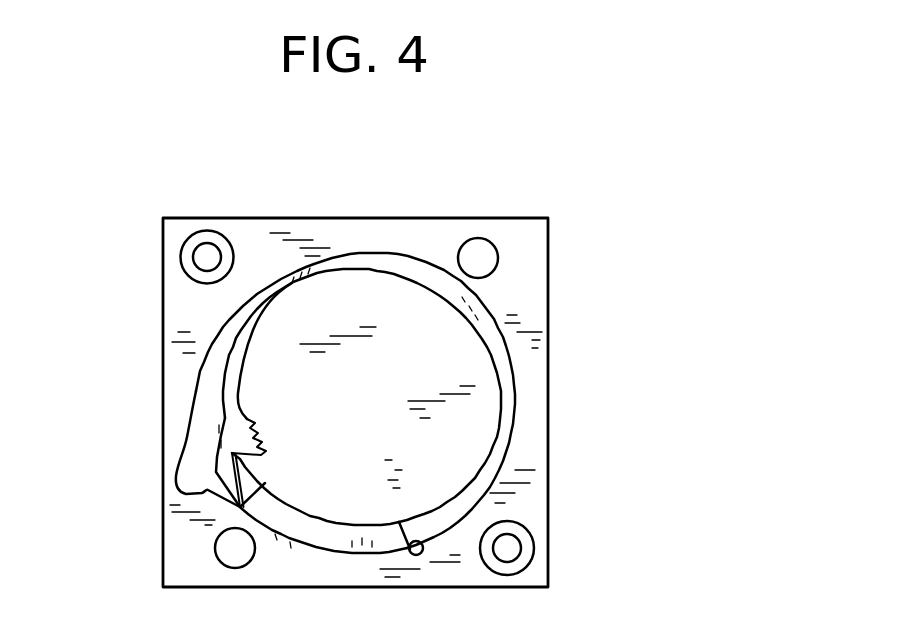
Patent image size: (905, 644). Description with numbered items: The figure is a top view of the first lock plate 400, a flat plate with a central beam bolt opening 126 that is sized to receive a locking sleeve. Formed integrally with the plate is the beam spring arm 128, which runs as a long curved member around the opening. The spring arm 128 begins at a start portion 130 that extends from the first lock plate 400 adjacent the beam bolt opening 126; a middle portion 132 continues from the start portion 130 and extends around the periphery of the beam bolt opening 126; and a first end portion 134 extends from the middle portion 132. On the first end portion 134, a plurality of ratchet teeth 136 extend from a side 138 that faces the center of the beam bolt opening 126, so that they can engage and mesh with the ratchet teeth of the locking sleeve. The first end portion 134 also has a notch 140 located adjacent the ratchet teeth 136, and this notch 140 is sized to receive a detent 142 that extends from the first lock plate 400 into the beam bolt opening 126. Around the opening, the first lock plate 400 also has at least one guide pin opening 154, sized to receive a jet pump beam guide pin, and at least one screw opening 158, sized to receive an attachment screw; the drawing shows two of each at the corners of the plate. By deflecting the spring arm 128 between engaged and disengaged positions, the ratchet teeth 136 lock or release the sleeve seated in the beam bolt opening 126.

The first lock plate 400 is at (622, 141).
The beam bolt opening 126 is at (394, 400).
The integral beam spring arm 128 is at (376, 272).
The start portion 130 is at (428, 515).
The middle portion 132 is at (508, 373).
The first end portion 134 is at (224, 434).
The ratchet teeth 136 is at (276, 418).
The side of first end portion 138 is at (258, 455).
The notch 140 is at (265, 470).
The detent 142 is at (245, 481).
The guide pin opening 154 is at (466, 239).
The screw opening 158 is at (181, 257).